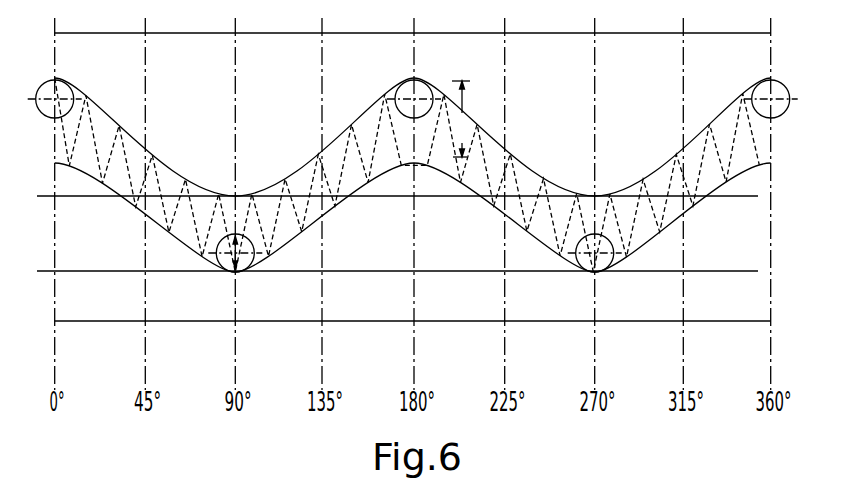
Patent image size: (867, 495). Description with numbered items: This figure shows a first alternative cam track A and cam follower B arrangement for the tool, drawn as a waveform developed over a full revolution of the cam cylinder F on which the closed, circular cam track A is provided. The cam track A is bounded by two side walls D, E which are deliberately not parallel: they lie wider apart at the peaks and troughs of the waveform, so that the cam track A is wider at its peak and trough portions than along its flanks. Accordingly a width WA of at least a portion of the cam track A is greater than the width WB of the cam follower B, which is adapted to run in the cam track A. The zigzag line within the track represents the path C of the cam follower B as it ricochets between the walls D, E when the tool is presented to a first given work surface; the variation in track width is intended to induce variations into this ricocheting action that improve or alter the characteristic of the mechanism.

The cam track A is at (149, 152).
The cam follower means B is at (238, 273).
The path of the cam follower C is at (295, 227).
The wall of the cam track D is at (97, 98).
The wall of the cam track E is at (88, 177).
The cam cylinder F is at (648, 104).
The width of the cam track WA is at (463, 119).
The width of the cam follower means WB is at (215, 263).